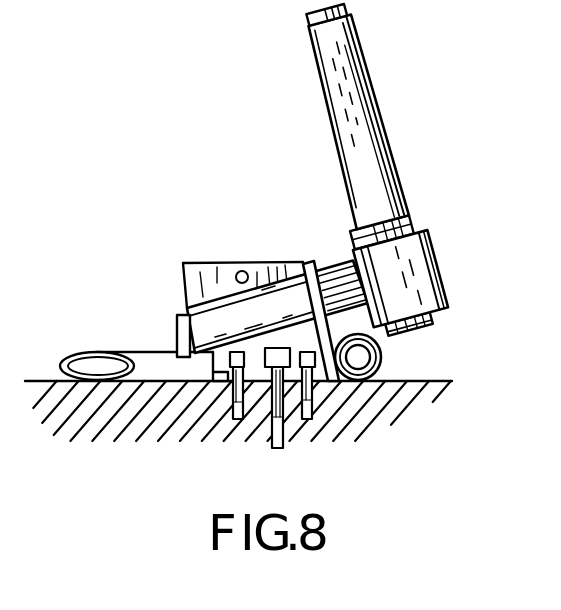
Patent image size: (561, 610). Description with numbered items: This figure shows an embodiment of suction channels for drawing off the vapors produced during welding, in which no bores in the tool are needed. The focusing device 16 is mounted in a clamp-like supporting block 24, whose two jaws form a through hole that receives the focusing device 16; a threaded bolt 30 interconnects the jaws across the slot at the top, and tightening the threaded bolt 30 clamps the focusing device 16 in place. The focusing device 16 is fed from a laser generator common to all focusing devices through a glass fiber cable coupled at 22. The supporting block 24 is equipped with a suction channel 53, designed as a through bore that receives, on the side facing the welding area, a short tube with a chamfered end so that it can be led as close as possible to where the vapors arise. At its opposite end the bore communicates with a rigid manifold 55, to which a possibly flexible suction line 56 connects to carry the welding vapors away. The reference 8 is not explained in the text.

The ground surface 8 is at (87, 417).
The focusing device 16 is at (462, 313).
The glass fiber cable coupling 22 is at (308, 22).
The supporting block 24 is at (195, 246).
The threaded bolt 30 is at (241, 270).
The suction channel 53 is at (153, 362).
The rigid manifold 55 is at (385, 362).
The suction line 56 is at (385, 346).